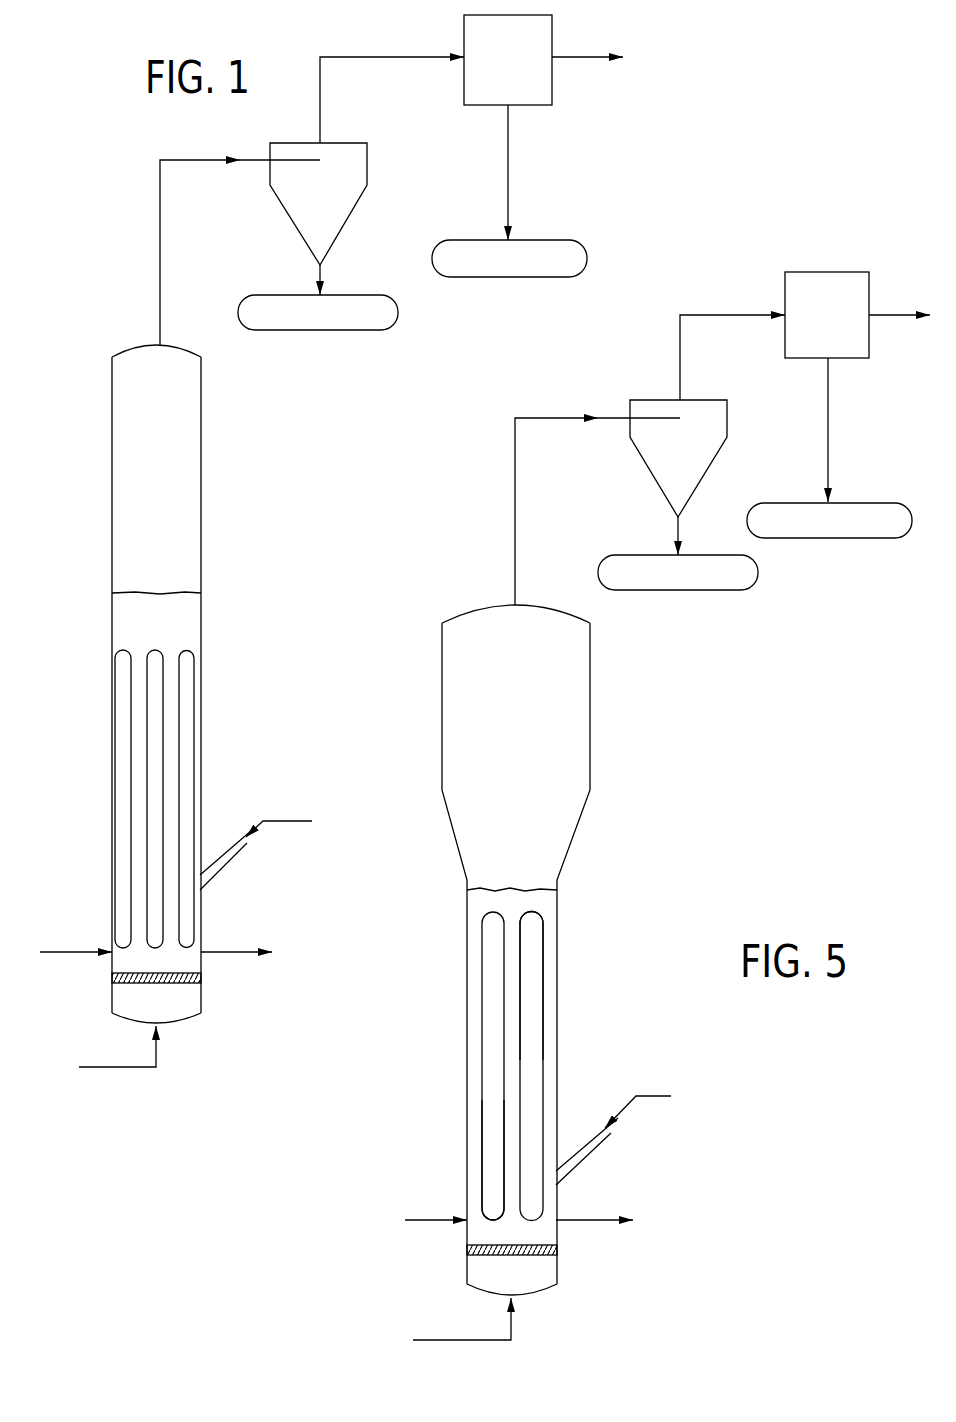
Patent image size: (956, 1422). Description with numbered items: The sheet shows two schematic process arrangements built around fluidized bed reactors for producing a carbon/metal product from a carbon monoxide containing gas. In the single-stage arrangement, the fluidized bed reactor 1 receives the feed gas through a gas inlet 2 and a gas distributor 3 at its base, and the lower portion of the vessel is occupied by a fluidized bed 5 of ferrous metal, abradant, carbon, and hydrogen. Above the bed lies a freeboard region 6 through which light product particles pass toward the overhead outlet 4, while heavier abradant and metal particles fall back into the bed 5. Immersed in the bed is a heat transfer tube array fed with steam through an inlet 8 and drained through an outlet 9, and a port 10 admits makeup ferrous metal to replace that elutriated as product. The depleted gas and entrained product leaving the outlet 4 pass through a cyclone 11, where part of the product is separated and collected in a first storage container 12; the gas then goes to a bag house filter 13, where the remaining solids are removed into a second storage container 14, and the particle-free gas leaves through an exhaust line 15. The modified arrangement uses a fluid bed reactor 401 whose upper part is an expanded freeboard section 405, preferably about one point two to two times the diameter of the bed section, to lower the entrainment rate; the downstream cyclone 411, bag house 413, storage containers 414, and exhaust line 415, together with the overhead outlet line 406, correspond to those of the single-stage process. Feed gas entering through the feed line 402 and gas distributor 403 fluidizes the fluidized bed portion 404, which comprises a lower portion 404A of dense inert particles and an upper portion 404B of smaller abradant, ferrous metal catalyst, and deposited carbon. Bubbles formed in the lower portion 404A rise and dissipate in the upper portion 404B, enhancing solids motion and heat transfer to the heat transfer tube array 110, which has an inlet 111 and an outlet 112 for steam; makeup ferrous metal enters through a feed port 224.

In FIG. 1, the fluidized bed reactor 1 is at (203, 567).
In FIG. 1, the gas inlet 2 is at (163, 1026).
In FIG. 1, the gas distributor 3 is at (186, 985).
In FIG. 1, the overhead outlet 4 is at (155, 343).
In FIG. 1, the fluidized bed 5 is at (188, 696).
In FIG. 1, the freeboard region 6 is at (183, 454).
In FIG. 1, the inlet 8 is at (65, 957).
In FIG. 1, the outlet 9 is at (230, 948).
In FIG. 1, the port 10 is at (232, 844).
In FIG. 1, the cyclone 11 is at (367, 158).
In FIG. 1, the first storage container 12 is at (338, 295).
In FIG. 1, the bag house filter 13 is at (552, 25).
In FIG. 1, the second storage container 14 is at (537, 240).
In FIG. 1, the exhaust line 15 is at (591, 60).
In FIG. 5, the fluid bed reactor 401 is at (560, 892).
In FIG. 5, the feed line 402 is at (476, 1336).
In FIG. 5, the gas distributor 403 is at (547, 1258).
In FIG. 5, the fluidized bed portion 404 is at (533, 945).
In FIG. 5, the lower portion 404A is at (533, 1224).
In FIG. 5, the upper portion 404B is at (529, 998).
In FIG. 5, the expanded freeboard section 405 is at (563, 725).
In FIG. 5, the reactor outlet line 406 is at (550, 417).
In FIG. 5, the heat transfer tube array 110 is at (482, 1065).
In FIG. 5, the inlet 111 is at (434, 1224).
In FIG. 5, the outlet 112 is at (584, 1216).
In FIG. 5, the feed port 224 is at (595, 1129).
In FIG. 5, the cyclone 411 is at (727, 416).
In FIG. 5, the bag house 413 is at (845, 272).
In FIG. 5, the product outlet 414 is at (643, 555).
In FIG. 5, the exhaust gas line 415 is at (888, 313).